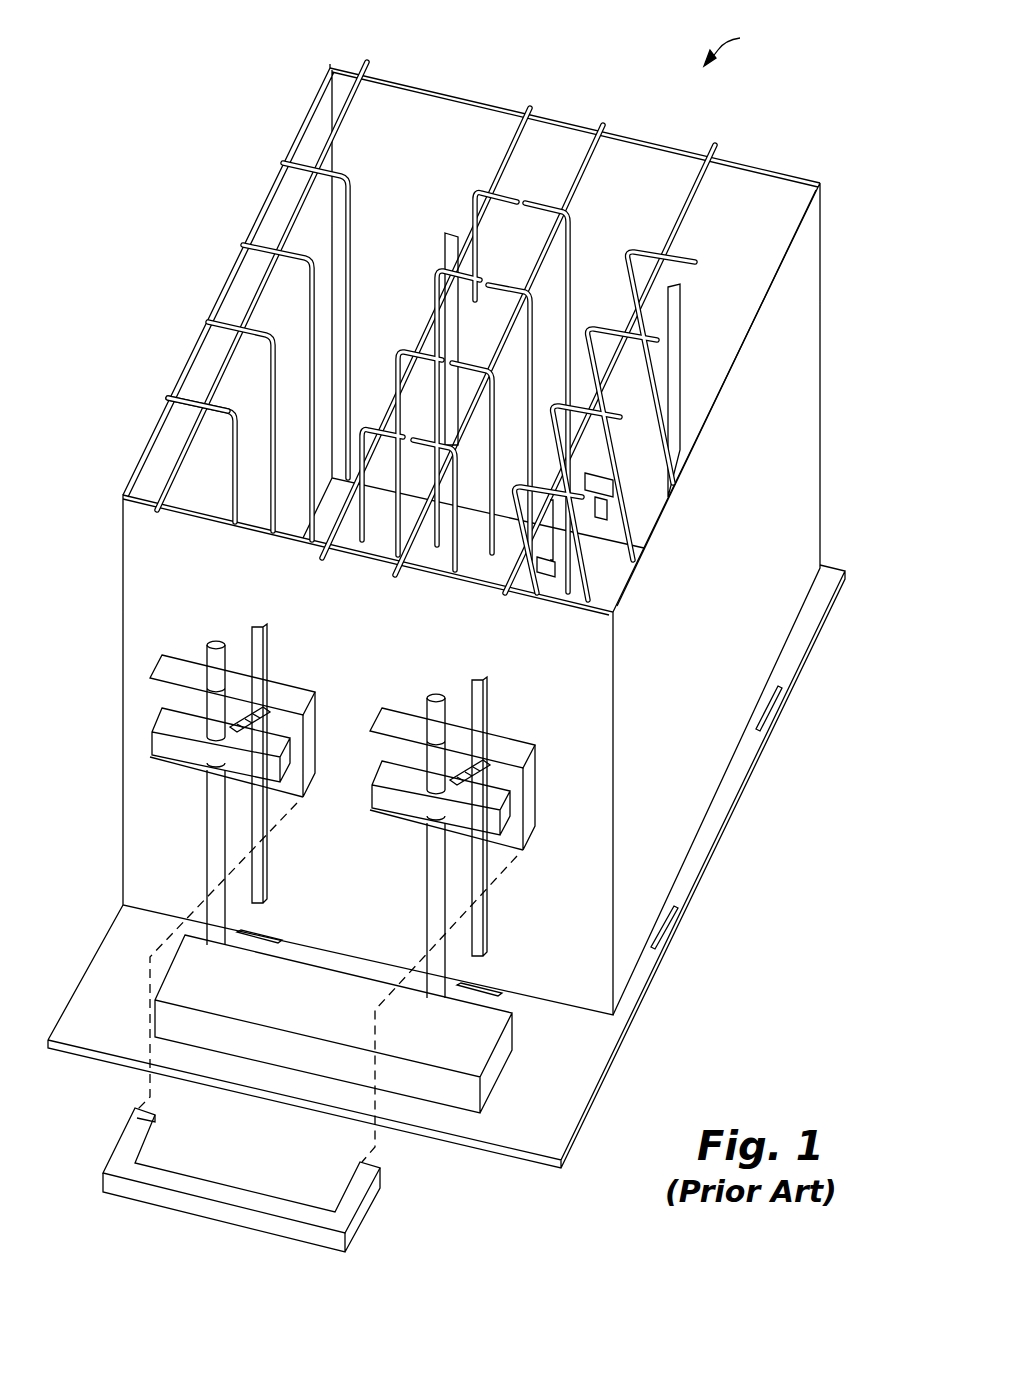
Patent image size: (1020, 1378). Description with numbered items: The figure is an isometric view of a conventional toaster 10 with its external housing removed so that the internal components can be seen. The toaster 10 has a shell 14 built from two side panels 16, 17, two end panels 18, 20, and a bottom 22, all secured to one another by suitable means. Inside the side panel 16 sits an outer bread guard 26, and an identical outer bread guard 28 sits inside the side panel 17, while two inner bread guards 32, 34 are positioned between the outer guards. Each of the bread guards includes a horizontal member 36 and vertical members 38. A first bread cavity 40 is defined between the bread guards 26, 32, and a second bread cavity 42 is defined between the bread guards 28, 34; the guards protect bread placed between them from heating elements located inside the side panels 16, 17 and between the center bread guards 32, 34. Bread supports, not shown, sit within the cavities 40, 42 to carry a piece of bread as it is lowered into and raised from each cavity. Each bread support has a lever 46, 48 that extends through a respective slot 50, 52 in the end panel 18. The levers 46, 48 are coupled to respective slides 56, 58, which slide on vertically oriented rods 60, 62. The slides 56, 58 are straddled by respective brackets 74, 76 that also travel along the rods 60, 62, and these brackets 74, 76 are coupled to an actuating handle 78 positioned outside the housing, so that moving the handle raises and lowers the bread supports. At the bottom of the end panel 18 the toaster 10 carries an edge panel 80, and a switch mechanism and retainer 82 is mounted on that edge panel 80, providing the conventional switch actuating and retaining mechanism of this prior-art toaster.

The toaster 10 is at (736, 38).
The shell 14 is at (180, 208).
The side panel 16 is at (203, 333).
The side panel 17 is at (795, 418).
The end panel 18 is at (155, 545).
The end panel 20 is at (798, 290).
The bottom 22 is at (700, 881).
The outer bread guard 26 is at (332, 68).
The outer bread guard 28 is at (715, 147).
The inner bread guard 32 is at (528, 106).
The inner bread guard 34 is at (602, 124).
The horizontal member 36 is at (172, 482).
The vertical members 38 is at (195, 397).
The first bread cavity 40 is at (412, 212).
The second bread cavity 42 is at (598, 246).
The lever 46 is at (262, 715).
The lever 48 is at (482, 768).
The slot 50 is at (268, 662).
The slot 52 is at (490, 715).
The slide 56 is at (165, 735).
The slide 58 is at (388, 790).
The rod 60 is at (212, 650).
The rod 62 is at (432, 705).
The bracket 74 is at (295, 693).
The bracket 76 is at (515, 746).
The actuating handle 78 is at (183, 1207).
The edge panel 80 is at (548, 1100).
The switch mechanism and retainer 82 is at (485, 1047).